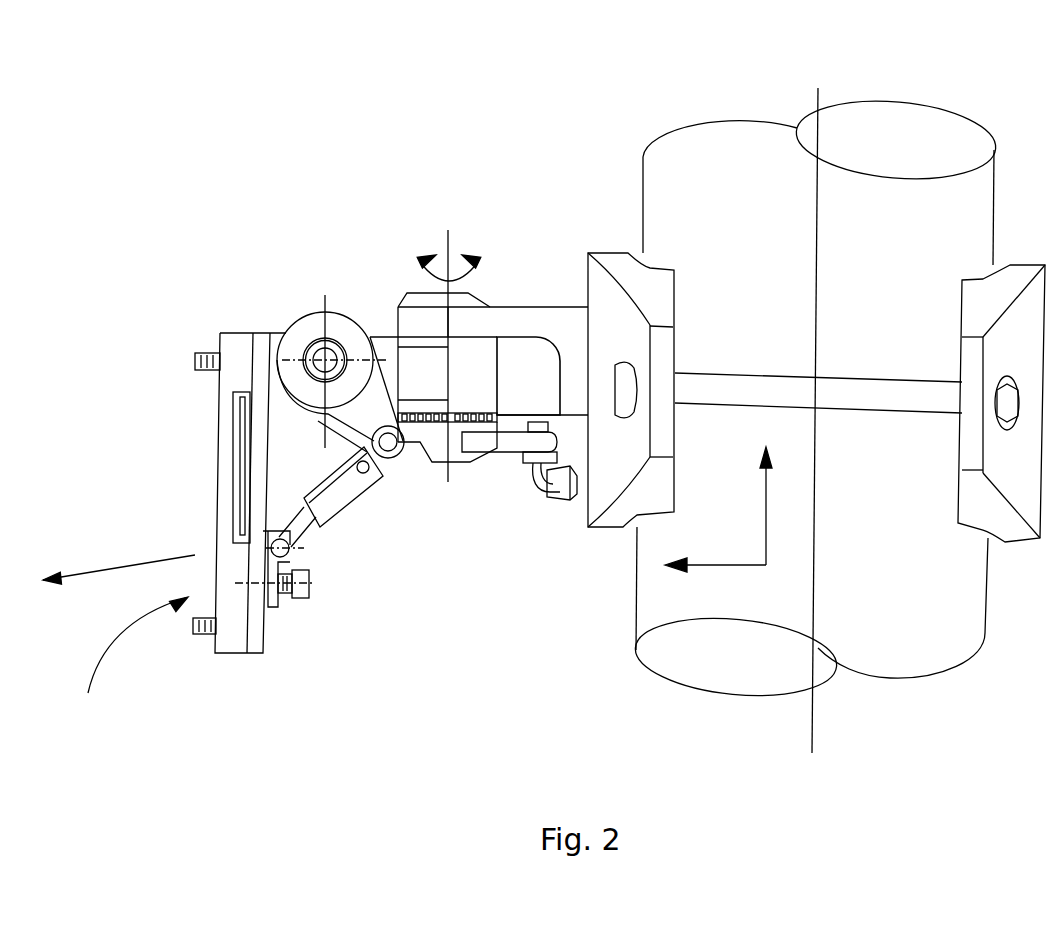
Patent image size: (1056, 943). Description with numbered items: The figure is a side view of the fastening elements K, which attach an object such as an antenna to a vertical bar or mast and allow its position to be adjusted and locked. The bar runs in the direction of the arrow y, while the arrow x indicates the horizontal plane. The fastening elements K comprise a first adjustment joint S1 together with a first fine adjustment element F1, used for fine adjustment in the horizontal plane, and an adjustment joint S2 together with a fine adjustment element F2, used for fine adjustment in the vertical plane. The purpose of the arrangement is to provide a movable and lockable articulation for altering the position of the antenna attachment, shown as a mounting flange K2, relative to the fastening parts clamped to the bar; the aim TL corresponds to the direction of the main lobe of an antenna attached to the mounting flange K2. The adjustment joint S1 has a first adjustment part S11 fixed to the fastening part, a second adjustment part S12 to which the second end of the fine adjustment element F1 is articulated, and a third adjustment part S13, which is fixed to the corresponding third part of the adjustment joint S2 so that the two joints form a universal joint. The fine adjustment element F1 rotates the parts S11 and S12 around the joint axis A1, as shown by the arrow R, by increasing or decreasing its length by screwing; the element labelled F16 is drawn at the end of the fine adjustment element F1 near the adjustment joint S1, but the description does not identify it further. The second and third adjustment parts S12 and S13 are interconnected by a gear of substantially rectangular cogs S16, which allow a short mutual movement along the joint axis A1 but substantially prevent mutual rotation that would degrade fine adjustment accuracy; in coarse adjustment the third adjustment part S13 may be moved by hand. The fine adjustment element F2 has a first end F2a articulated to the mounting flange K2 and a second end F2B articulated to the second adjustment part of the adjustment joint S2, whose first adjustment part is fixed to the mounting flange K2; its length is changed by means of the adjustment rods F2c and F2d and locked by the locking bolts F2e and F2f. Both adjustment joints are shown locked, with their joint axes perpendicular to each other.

The fastening elements K is at (496, 31).
The first fine adjustment element F1 is at (561, 508).
The tie rod with clevis and nut F16 is at (525, 475).
The fine adjustment element F2 is at (360, 512).
The first end of fine adjustment element F2 F2a is at (314, 558).
The second end of fine adjustment element F2 F2B is at (407, 476).
The adjustment rod F2c is at (288, 533).
The adjustment rod F2d is at (320, 485).
The locking bolt F2e is at (305, 500).
The locking bolt F2f is at (342, 468).
The first adjustment joint S1 is at (392, 294).
The first adjustment part S11 is at (487, 317).
The second adjustment part S12 is at (422, 430).
The third adjustment part S13 is at (477, 365).
The cogs S16 is at (500, 422).
The adjustment joint S2 is at (290, 305).
The joint axis A1 is at (447, 240).
The rotation arrow R is at (420, 270).
The aim TL is at (98, 573).
The mounting flange K2 is at (129, 659).
The arrow X x is at (737, 565).
The arrow Y y is at (768, 480).